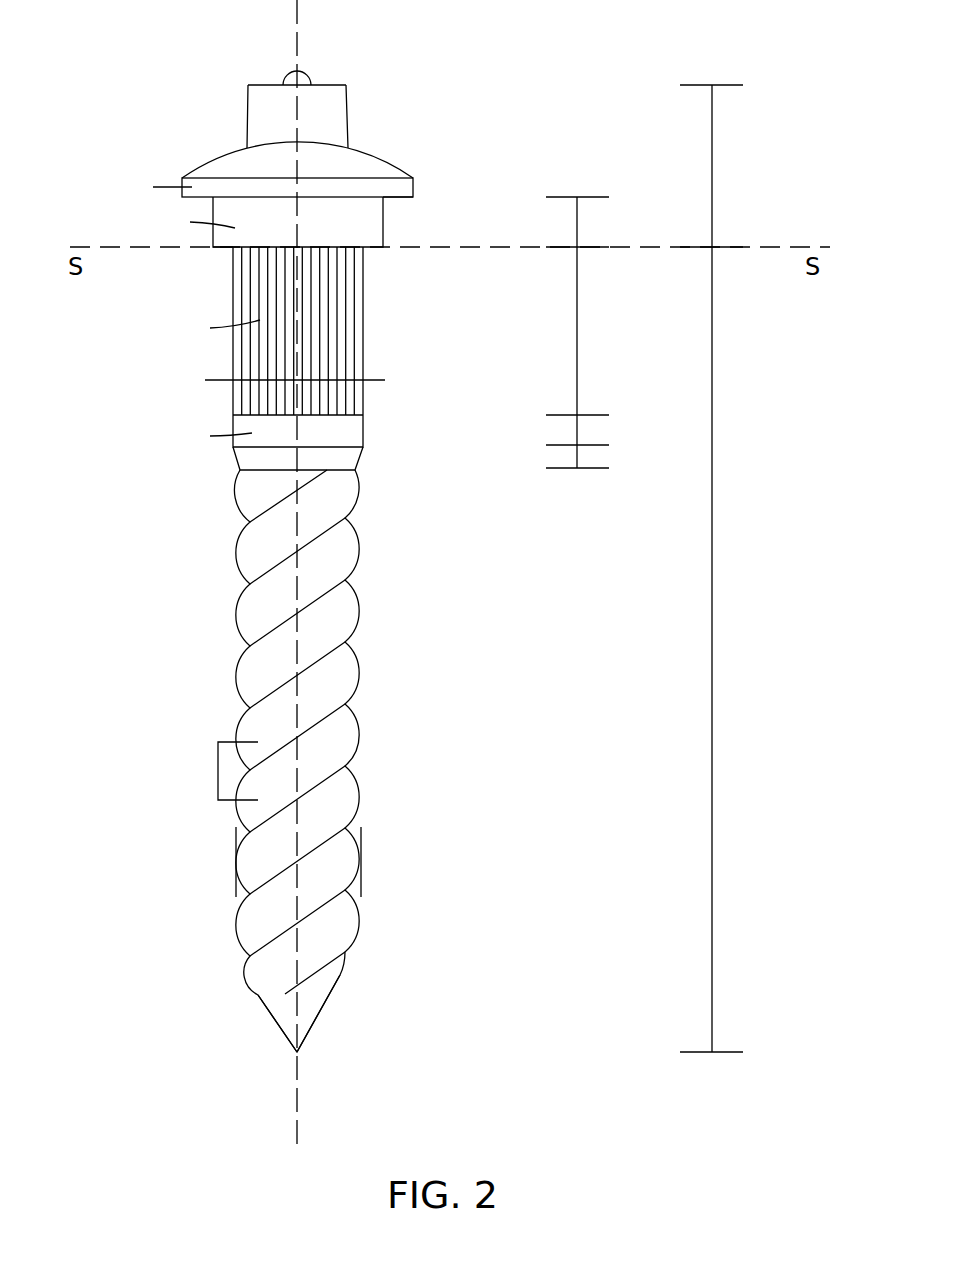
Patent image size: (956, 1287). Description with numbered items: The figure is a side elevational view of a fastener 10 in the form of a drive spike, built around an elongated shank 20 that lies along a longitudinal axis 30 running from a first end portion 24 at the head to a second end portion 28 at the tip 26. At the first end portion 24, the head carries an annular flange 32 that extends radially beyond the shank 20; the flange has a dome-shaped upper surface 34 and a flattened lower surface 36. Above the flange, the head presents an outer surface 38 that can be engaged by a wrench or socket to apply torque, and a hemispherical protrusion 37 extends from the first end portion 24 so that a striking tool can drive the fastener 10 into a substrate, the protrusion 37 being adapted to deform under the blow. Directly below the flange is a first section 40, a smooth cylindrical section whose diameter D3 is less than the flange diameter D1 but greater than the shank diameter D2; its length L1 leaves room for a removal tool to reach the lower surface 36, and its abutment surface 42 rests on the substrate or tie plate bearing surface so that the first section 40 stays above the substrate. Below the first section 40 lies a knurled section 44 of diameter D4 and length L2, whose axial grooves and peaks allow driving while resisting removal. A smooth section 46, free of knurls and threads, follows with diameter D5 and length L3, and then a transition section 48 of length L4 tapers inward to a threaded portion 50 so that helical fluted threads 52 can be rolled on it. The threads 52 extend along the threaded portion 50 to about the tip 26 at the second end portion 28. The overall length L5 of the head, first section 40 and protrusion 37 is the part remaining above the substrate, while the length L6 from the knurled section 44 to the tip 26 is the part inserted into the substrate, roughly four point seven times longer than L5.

The fastener 10 is at (505, 583).
The shank 20 is at (442, 659).
The first end portion 24 is at (377, 78).
The tip 26 is at (316, 1022).
The second end portion 28 is at (362, 1032).
The longitudinal axis 30 is at (297, 1078).
The annular flange 32 is at (403, 189).
The dome-shaped upper surface 34 is at (218, 152).
The flattened lower surface 36 is at (396, 198).
The protrusion 37 is at (305, 76).
The outer surface 38 is at (327, 116).
The first section 40 is at (352, 218).
The abutment surface 42 is at (222, 250).
The knurled section 44 is at (328, 326).
The smooth section 46 is at (342, 432).
The transition section 48 is at (237, 462).
The threaded portion 50 is at (413, 748).
The threads 52 is at (363, 549).
The diameter of annular flange D1 is at (157, 186).
The diameter of threaded portion D2 is at (365, 885).
The diameter of first section D3 is at (196, 220).
The diameter of knurled section D4 is at (219, 327).
The diameter of smooth section D5 is at (215, 434).
The length of first section L1 is at (577, 222).
The length of knurled section L2 is at (577, 340).
The length of smooth section L3 is at (577, 433).
The length of transition section L4 is at (577, 458).
The length of head, first section and protrusion L5 is at (712, 165).
The length of shank from knurled section to tip L6 is at (712, 686).